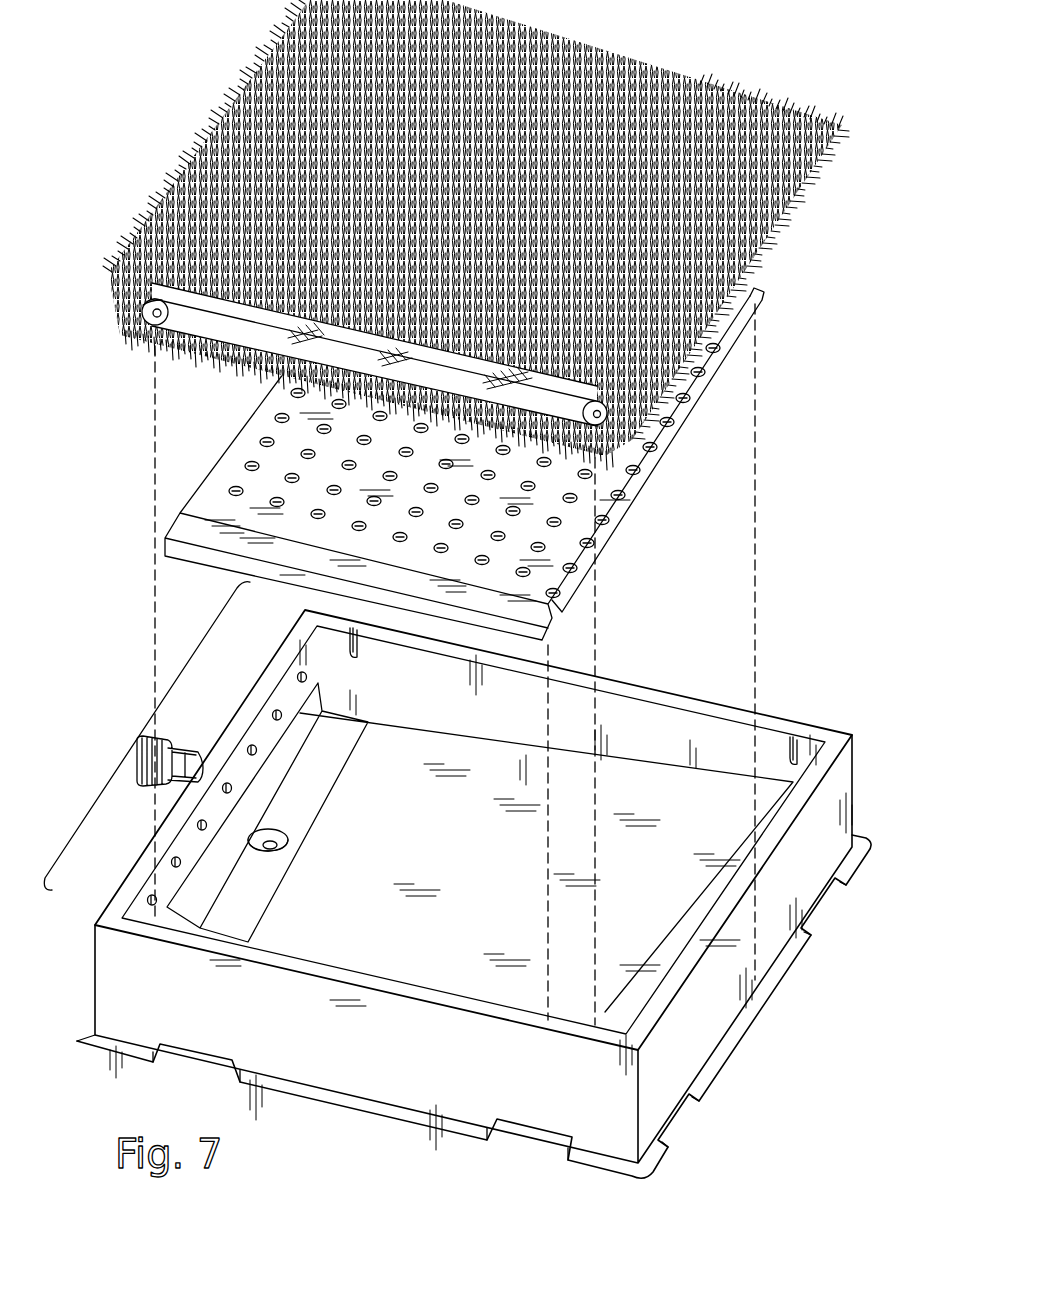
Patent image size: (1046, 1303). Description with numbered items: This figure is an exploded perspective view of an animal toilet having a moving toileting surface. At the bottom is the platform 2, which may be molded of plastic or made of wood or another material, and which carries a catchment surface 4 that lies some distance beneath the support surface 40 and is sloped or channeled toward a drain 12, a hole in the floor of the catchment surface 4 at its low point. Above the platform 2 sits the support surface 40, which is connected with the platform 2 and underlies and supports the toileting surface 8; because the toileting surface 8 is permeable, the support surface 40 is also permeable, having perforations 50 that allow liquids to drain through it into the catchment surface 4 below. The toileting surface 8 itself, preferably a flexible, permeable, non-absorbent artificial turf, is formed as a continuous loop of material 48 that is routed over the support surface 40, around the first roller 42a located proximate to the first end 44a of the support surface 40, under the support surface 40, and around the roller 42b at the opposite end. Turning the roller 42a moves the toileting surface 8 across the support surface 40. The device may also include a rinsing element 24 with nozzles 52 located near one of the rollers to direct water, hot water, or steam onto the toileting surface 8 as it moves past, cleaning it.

The platform 2 is at (842, 778).
The catchment surface 4 is at (727, 787).
The toileting surface 8 is at (775, 70).
The drain 12 is at (288, 840).
The rinsing element 24 is at (142, 733).
The support surface 40 is at (464, 464).
The first roller 42a is at (628, 427).
The first roller 42b is at (142, 308).
The first end 44a is at (617, 538).
The continuous loop of material 48 is at (237, 303).
The perforations 50 is at (233, 490).
The nozzles 52 is at (282, 714).